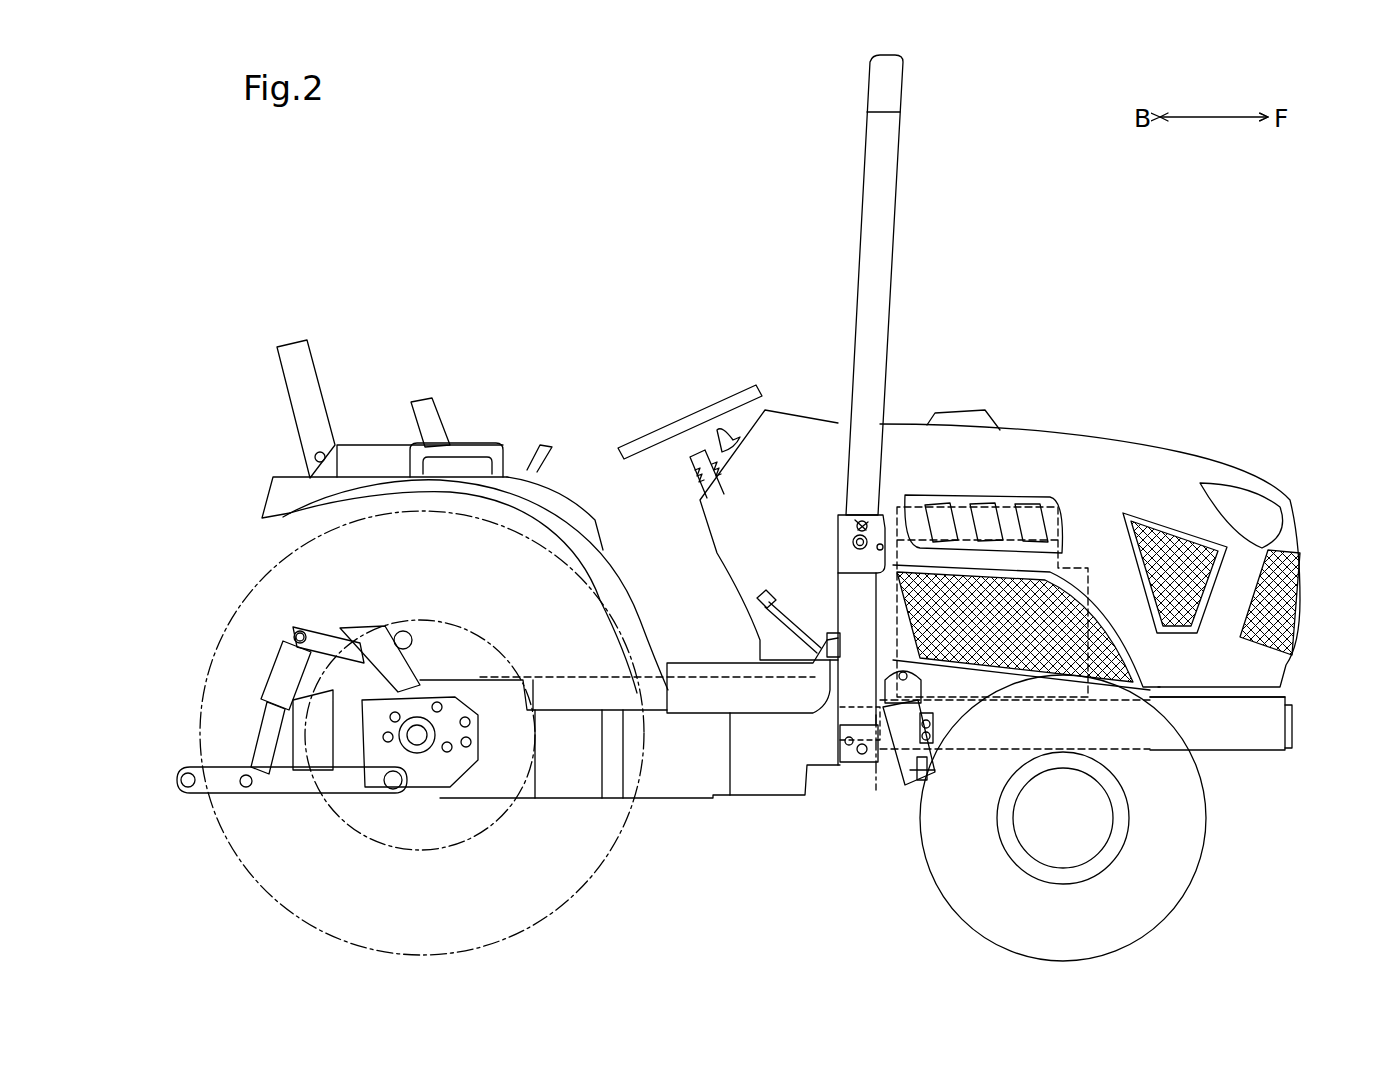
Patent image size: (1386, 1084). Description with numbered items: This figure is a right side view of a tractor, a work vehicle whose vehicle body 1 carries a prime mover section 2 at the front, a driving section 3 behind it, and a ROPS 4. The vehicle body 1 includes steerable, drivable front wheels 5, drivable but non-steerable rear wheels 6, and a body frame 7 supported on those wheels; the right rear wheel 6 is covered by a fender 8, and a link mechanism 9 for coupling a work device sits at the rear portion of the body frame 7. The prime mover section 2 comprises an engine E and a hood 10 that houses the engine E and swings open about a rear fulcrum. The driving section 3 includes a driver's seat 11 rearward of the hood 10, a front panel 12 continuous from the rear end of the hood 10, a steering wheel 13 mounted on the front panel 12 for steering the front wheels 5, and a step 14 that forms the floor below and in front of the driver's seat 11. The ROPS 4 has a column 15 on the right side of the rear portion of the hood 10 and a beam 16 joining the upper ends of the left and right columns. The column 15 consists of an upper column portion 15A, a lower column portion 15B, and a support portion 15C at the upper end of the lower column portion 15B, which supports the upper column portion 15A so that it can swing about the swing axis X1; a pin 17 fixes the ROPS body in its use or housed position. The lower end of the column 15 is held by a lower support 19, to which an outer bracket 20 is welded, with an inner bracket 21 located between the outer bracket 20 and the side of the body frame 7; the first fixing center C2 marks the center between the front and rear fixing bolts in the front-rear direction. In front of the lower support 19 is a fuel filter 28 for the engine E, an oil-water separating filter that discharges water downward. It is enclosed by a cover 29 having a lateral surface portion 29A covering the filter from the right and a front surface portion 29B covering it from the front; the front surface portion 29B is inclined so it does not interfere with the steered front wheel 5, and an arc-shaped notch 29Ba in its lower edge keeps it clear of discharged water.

The vehicle body 1 is at (1238, 790).
The prime mover section 2 is at (1262, 480).
The driving section 3 is at (587, 366).
The ROPS 4 is at (918, 105).
The front wheels 5 is at (1196, 842).
The rear wheels 6 is at (258, 876).
The body frame 7 is at (818, 772).
The fender 8 is at (385, 479).
The link mechanism 9 is at (233, 748).
The hood 10 is at (1140, 440).
The driver's seat 11 is at (433, 403).
The front panel 12 is at (793, 460).
The steering wheel 13 is at (690, 420).
The step 14 is at (706, 672).
The column 15 is at (853, 246).
The upper column portion 15A is at (866, 186).
The lower column portion 15B is at (848, 622).
The support portion 15C is at (840, 557).
The beam 16 is at (882, 57).
The pin 17 is at (866, 528).
The lower support 19 is at (852, 722).
The outer bracket 20 is at (841, 780).
The inner bracket 21 is at (934, 736).
The fuel filter 28 is at (912, 703).
The cover 29 is at (930, 760).
The lateral surface portion 29A is at (893, 768).
The front surface portion 29B is at (922, 778).
The notch 29Ba is at (928, 782).
The engine E is at (1055, 507).
The swing axis X1 is at (857, 540).
The first fixing center C2 is at (872, 765).